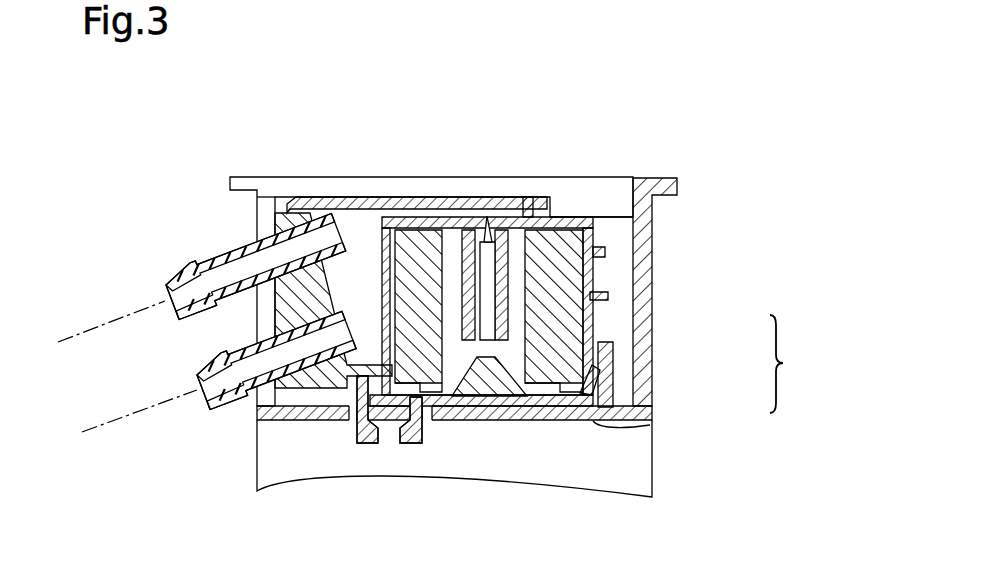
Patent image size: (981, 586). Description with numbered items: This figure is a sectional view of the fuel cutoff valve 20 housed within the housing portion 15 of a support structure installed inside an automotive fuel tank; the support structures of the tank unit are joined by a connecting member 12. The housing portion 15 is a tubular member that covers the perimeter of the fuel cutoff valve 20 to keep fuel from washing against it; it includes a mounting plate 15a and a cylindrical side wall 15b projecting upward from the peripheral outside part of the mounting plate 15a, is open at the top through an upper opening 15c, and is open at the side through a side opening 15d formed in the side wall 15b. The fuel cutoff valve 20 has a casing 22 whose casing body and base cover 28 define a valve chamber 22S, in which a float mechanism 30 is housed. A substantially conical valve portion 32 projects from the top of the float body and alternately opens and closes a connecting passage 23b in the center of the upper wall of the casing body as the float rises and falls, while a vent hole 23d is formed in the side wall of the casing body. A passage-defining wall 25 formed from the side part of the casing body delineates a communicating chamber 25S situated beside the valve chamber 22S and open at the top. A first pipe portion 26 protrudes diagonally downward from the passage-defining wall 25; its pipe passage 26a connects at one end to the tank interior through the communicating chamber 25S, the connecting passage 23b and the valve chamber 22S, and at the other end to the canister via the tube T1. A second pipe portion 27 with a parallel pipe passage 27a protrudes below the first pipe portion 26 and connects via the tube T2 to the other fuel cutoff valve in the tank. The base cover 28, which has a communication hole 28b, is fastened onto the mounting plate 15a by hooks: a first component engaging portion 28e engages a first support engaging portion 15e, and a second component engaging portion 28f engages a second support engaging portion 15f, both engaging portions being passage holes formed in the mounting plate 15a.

The connecting member 12 is at (652, 462).
The housing portion 15 is at (790, 364).
The mounting plate 15a is at (593, 423).
The side wall 15b is at (632, 382).
The housing top plate 15c is at (297, 177).
The side opening 15d is at (258, 200).
The first support engaging portion 15e is at (428, 420).
The second support engaging portion 15f is at (350, 418).
The fuel cutoff valve 20 is at (512, 178).
The casing 22 is at (592, 270).
The valve chamber 22S is at (640, 213).
The connecting passage 23b is at (487, 215).
The vent hole 23d is at (588, 250).
The passage-defining wall 25 is at (330, 262).
The communicating chamber 25S is at (380, 268).
The first pipe portion 26 is at (215, 262).
The pipe passage 26a is at (212, 289).
The second pipe portion 27 is at (253, 348).
The pipe passage 27a is at (222, 378).
The base cover 28 is at (505, 422).
The communication hole 28b is at (578, 395).
The first component engaging portion 28e is at (410, 443).
The second component engaging portion 28f is at (360, 443).
The float mechanism 30 is at (632, 310).
The valve portion 32 is at (520, 215).
The tube T1 is at (82, 333).
The tube T2 is at (95, 425).